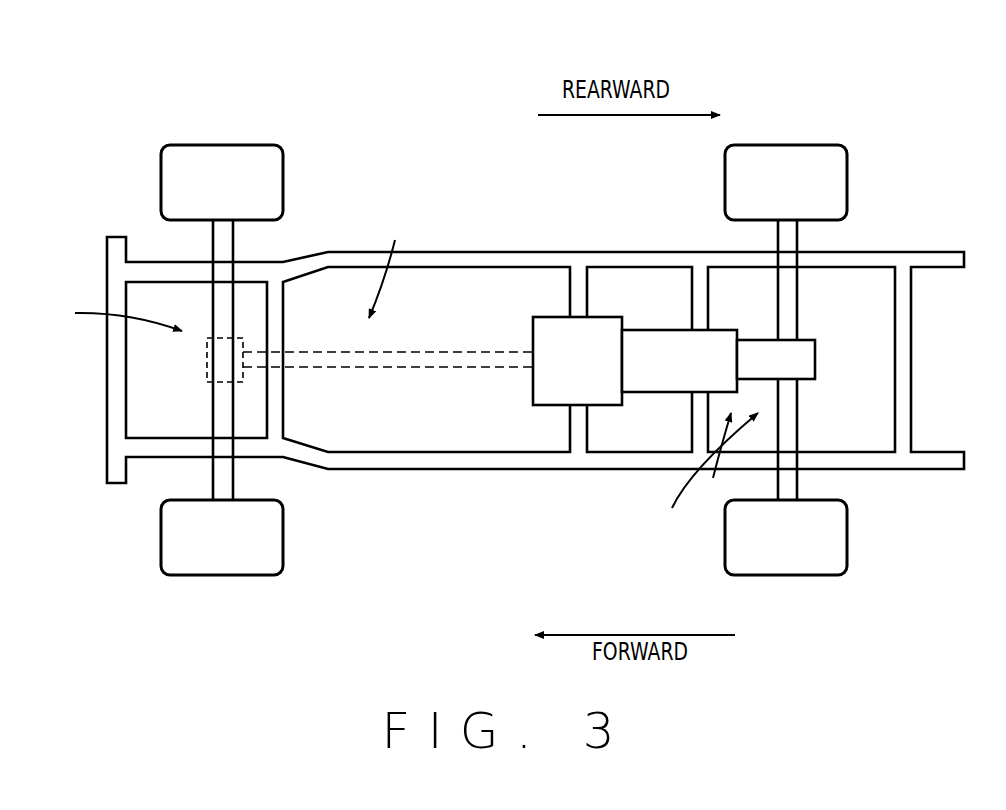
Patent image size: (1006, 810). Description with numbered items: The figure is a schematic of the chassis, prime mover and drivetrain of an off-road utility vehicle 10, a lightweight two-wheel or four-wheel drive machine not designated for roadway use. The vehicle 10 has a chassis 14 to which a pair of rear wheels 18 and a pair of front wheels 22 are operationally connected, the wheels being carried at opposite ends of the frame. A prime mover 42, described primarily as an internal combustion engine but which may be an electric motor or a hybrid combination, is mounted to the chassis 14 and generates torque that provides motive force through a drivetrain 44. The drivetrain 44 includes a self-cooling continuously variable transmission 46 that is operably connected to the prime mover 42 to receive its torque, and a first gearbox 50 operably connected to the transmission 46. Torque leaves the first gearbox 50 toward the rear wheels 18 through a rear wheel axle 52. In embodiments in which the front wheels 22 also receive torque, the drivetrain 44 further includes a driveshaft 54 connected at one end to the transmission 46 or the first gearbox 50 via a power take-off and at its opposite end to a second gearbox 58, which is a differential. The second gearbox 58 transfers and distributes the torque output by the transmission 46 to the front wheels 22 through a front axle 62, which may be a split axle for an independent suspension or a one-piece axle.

The off-road utility vehicle 10 is at (889, 78).
The chassis 14 is at (445, 258).
The rear wheels 18 is at (772, 178).
The front wheels 22 is at (212, 172).
The prime mover 42 is at (548, 387).
The drivetrain 44 is at (401, 369).
The self-cooling continuously variable transmission 46 is at (645, 384).
The first gearbox 50 is at (805, 352).
The rear wheel axle 52 is at (783, 312).
The driveshaft 54 is at (397, 355).
The second gearbox 58 is at (215, 360).
The front axle 62 is at (222, 312).